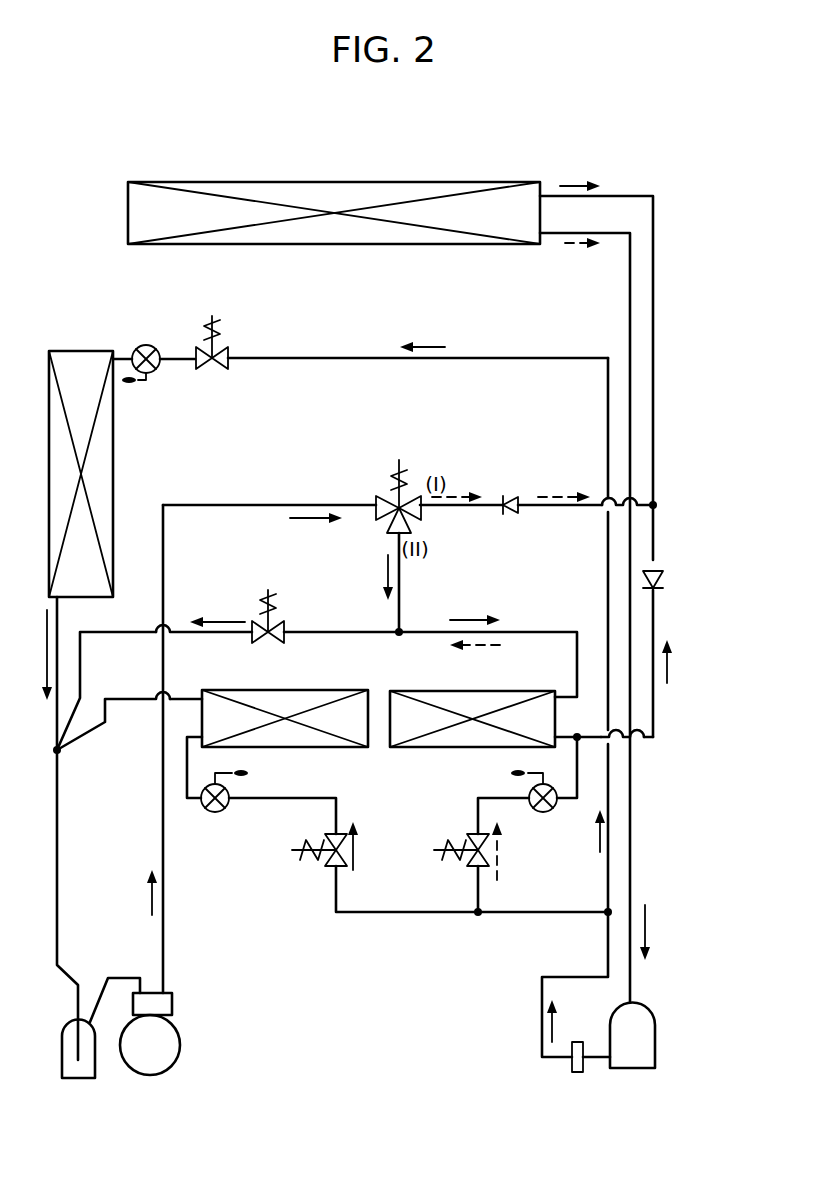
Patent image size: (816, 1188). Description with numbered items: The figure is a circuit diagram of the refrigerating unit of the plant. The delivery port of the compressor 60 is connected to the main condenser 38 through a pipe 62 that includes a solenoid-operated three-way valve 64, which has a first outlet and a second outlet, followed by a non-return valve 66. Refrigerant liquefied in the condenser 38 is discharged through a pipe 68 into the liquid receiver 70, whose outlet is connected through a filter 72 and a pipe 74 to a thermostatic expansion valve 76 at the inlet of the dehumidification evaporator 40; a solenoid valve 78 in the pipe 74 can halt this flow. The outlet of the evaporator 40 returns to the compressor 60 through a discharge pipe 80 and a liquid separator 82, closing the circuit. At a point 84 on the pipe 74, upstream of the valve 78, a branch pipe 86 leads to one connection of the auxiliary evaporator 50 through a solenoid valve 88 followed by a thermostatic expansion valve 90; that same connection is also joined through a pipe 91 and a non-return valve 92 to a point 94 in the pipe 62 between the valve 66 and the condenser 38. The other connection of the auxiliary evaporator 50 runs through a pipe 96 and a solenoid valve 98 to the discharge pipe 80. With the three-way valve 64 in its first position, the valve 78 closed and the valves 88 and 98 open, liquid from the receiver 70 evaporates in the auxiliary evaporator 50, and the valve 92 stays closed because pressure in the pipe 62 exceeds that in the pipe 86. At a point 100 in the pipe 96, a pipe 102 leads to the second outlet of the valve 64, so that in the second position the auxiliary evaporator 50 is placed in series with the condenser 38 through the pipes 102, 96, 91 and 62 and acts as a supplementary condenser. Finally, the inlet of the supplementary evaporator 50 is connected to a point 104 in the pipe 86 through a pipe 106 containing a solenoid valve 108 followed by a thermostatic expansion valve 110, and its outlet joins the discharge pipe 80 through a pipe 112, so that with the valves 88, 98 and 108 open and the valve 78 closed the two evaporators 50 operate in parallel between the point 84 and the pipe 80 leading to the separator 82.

The main condenser 38 is at (332, 194).
The dehumidification evaporator 40 is at (106, 447).
The auxiliary evaporator and supplementary evaporator 50 is at (232, 690).
The compressor 60 is at (170, 1040).
The pipe 62 is at (656, 312).
The solenoid-operated three-way valve 64 is at (383, 472).
The non-return valve 66 is at (511, 498).
The pipe 68 is at (628, 282).
The liquid receiver 70 is at (640, 1030).
The filter 72 is at (572, 1066).
The pipe 74 is at (522, 357).
The thermostatic expansion valve 76 is at (146, 345).
The solenoid valve 78 is at (236, 328).
The pipe 80 is at (60, 770).
The liquid separator 82 is at (90, 1078).
The point 84 is at (606, 915).
The branch pipe 86 is at (478, 797).
The solenoid valve 88 is at (452, 864).
The thermostatic expansion valve 90 is at (543, 812).
The pipe 91 is at (656, 742).
The non-return valve 92 is at (660, 570).
The point 94 is at (656, 500).
The pipe 96 is at (108, 631).
The solenoid valve 98 is at (286, 610).
The point 100 is at (398, 636).
The pipe 102 is at (402, 575).
The point 104 is at (476, 914).
The pipe 106 is at (290, 797).
The solenoid valve 108 is at (314, 864).
The thermostatic expansion valve 110 is at (215, 812).
The pipe 112 is at (130, 698).